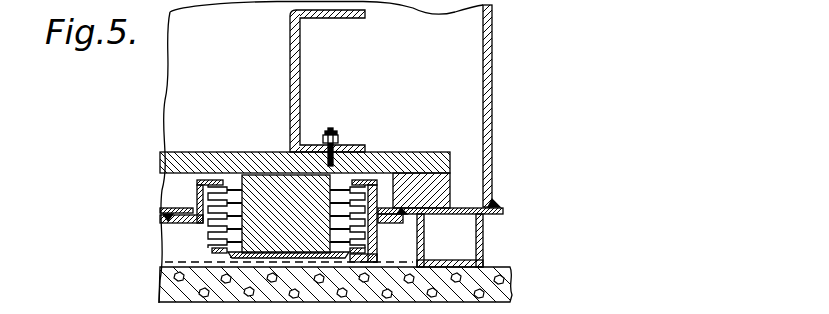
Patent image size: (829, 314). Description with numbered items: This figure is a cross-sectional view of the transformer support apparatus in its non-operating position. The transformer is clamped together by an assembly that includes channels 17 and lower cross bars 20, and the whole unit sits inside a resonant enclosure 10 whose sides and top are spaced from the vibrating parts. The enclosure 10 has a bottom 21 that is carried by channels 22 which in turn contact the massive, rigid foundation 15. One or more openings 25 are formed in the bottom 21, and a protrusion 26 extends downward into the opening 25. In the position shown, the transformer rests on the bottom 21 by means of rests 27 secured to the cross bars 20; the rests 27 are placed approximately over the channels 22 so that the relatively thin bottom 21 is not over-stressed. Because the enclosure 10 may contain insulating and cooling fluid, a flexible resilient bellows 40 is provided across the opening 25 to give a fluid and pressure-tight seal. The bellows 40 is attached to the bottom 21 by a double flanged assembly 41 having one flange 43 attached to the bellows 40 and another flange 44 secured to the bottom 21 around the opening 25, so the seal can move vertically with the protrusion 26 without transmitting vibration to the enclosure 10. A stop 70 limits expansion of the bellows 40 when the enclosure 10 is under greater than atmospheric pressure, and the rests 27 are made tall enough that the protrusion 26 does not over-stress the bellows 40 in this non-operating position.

The enclosure 10 is at (493, 80).
The channels 17 is at (290, 133).
The lower cross bars 20 is at (322, 156).
The flange 43 is at (158, 172).
The rests 27 is at (451, 190).
The bottom 21 is at (503, 212).
The channels 22 is at (484, 247).
The foundation 15 is at (514, 286).
The double flanged assembly 41 is at (197, 182).
The opening 25 is at (184, 210).
The flange 44 is at (213, 228).
The bellows 40 is at (222, 244).
The protrusion 26 is at (165, 257).
The stop 70 is at (378, 250).